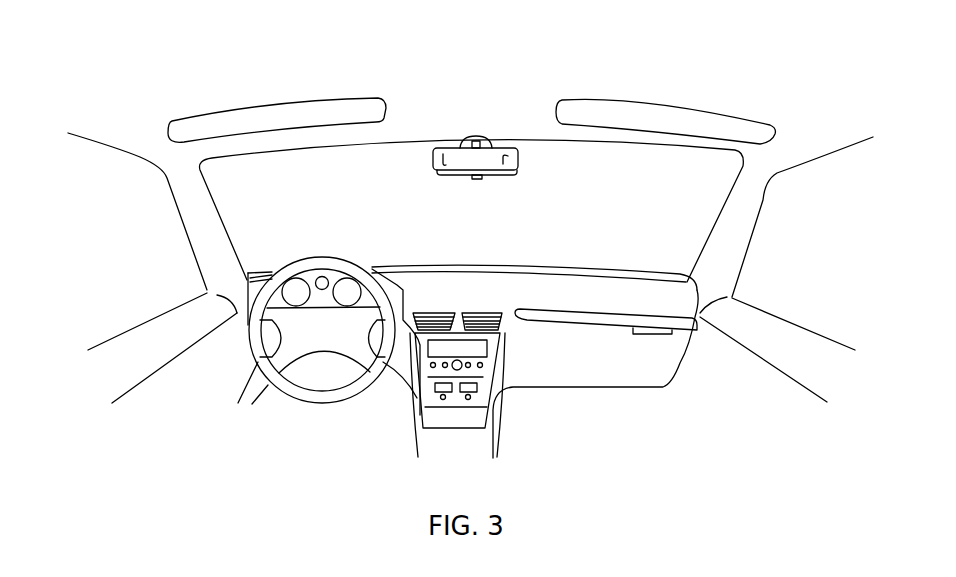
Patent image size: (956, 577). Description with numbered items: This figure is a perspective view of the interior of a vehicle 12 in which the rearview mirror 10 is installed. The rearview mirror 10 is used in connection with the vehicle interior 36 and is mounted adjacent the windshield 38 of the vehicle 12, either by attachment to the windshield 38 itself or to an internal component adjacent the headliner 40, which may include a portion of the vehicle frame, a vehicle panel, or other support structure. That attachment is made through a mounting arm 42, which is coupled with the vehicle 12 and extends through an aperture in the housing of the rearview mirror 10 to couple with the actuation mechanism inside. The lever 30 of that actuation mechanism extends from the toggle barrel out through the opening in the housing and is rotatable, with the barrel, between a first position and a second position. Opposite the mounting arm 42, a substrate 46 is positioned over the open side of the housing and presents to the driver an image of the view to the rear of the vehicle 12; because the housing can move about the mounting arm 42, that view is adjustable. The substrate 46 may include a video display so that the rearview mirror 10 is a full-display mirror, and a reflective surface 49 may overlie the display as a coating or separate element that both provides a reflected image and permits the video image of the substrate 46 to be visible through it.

The rearview mirror 10 is at (519, 158).
The vehicle 12 is at (680, 54).
The lever 30 is at (478, 179).
The vehicle interior 36 is at (787, 122).
The windshield 38 is at (610, 217).
The headliner 40 is at (415, 88).
The mounting arm 42 is at (478, 140).
The substrate 46 is at (442, 174).
The reflective surface 49 is at (516, 162).